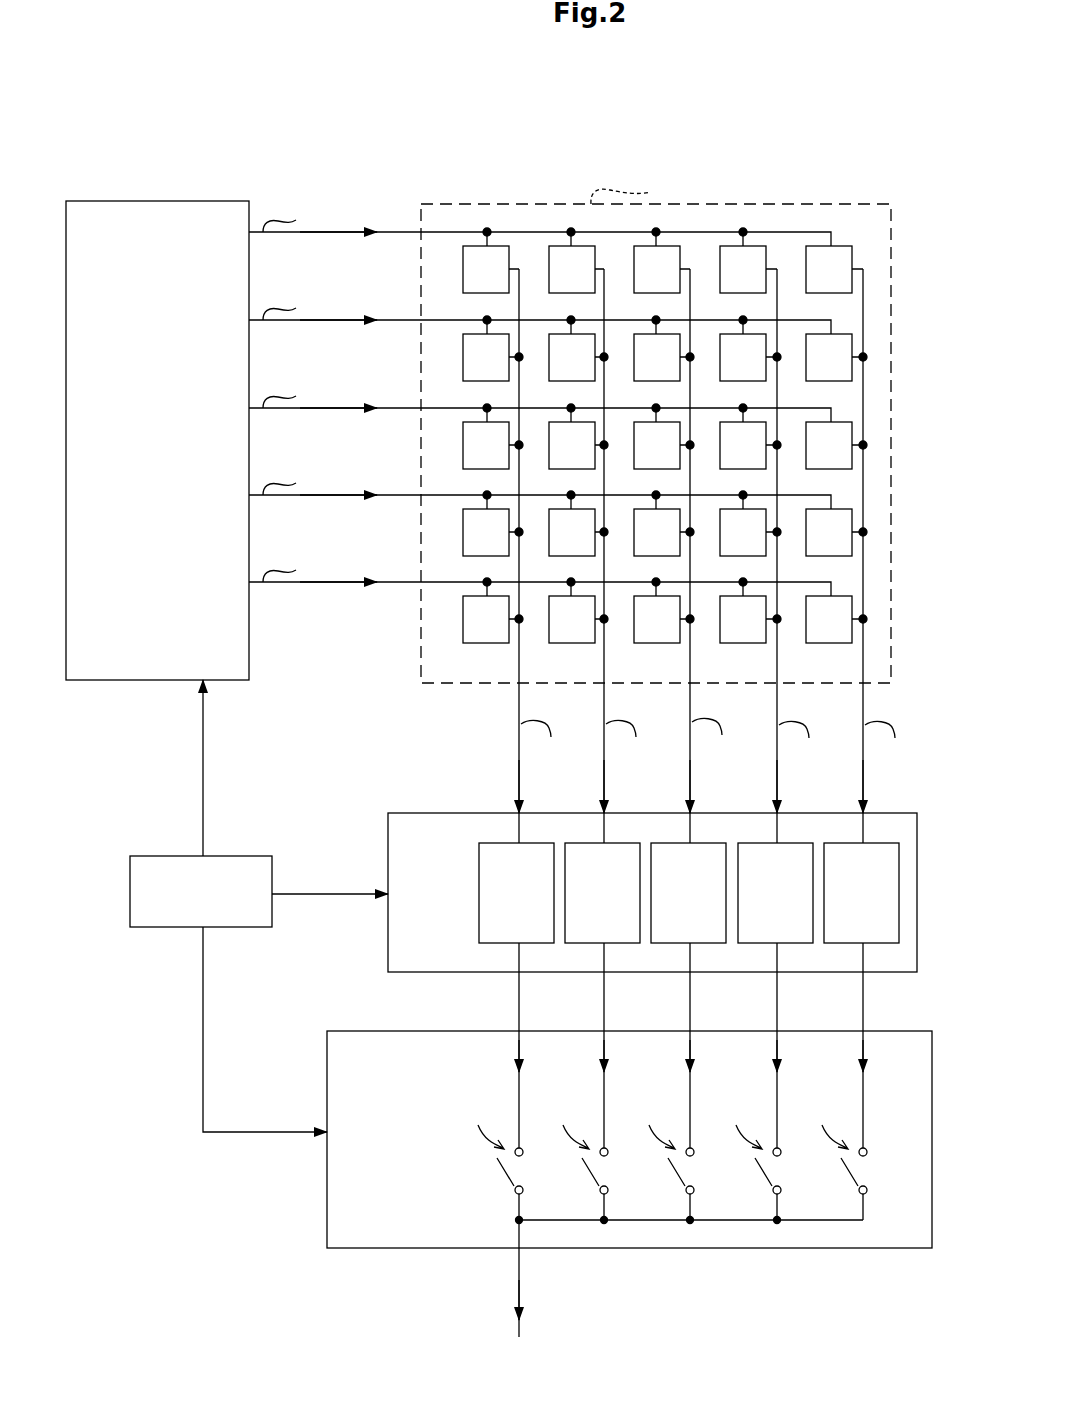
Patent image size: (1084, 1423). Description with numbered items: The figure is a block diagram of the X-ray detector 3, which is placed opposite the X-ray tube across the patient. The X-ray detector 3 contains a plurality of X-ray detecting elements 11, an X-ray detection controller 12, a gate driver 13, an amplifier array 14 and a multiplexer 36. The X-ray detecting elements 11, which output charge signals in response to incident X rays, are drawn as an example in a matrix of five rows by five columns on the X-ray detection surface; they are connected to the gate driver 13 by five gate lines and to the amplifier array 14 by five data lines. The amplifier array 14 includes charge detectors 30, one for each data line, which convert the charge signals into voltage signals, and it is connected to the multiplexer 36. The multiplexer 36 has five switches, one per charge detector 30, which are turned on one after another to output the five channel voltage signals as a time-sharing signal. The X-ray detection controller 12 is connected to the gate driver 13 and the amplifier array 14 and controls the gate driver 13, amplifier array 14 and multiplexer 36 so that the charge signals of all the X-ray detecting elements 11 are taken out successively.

The X-ray detector 3 is at (557, 153).
The X-ray detecting element 11 is at (838, 267).
The X-ray detection controller 12 is at (222, 856).
The gate driver 13 is at (177, 201).
The amplifier array 14 is at (446, 800).
The charge detector 30 is at (482, 924).
The multiplexer 36 is at (463, 1031).